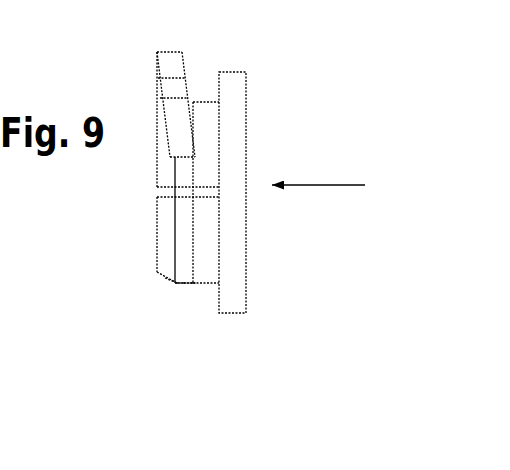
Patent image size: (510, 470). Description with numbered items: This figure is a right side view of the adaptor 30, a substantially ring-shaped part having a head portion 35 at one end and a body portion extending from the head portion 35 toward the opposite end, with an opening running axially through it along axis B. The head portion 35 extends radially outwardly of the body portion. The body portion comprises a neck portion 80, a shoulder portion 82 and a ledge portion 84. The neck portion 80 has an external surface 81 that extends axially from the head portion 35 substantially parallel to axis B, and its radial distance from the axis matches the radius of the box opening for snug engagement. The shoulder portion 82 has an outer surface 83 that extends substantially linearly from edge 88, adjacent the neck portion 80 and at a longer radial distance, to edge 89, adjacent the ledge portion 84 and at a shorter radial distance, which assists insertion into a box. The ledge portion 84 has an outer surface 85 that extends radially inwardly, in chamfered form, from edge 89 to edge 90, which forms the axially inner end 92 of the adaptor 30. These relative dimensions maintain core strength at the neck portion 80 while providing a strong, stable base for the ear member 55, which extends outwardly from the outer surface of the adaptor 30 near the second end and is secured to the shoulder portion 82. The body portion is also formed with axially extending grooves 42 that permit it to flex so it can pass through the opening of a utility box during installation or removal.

The adaptor 30 is at (312, 82).
The head portion 35 is at (232, 277).
The ear member 55 is at (143, 60).
The external surface of neck portion 81 is at (201, 100).
The axially inner end 92 is at (86, 213).
The axially extending grooves 42 is at (155, 192).
The shoulder portion 82 is at (178, 217).
The ledge portion 84 is at (170, 247).
The edge 90 is at (158, 272).
The outer surface of ledge portion 85 is at (163, 282).
The edge 89 is at (165, 283).
The outer surface of shoulder portion 83 is at (173, 283).
The edge 88 is at (190, 283).
The neck portion 80 is at (207, 283).